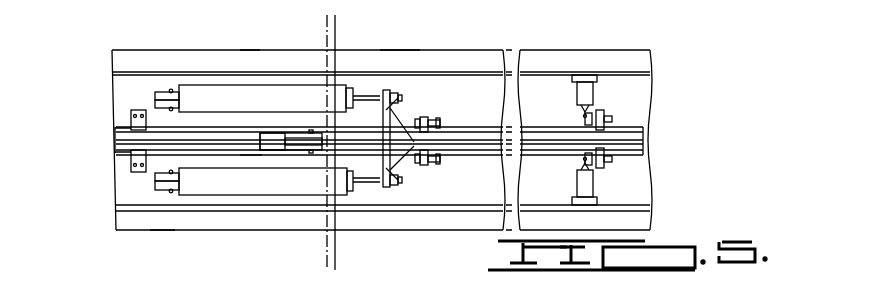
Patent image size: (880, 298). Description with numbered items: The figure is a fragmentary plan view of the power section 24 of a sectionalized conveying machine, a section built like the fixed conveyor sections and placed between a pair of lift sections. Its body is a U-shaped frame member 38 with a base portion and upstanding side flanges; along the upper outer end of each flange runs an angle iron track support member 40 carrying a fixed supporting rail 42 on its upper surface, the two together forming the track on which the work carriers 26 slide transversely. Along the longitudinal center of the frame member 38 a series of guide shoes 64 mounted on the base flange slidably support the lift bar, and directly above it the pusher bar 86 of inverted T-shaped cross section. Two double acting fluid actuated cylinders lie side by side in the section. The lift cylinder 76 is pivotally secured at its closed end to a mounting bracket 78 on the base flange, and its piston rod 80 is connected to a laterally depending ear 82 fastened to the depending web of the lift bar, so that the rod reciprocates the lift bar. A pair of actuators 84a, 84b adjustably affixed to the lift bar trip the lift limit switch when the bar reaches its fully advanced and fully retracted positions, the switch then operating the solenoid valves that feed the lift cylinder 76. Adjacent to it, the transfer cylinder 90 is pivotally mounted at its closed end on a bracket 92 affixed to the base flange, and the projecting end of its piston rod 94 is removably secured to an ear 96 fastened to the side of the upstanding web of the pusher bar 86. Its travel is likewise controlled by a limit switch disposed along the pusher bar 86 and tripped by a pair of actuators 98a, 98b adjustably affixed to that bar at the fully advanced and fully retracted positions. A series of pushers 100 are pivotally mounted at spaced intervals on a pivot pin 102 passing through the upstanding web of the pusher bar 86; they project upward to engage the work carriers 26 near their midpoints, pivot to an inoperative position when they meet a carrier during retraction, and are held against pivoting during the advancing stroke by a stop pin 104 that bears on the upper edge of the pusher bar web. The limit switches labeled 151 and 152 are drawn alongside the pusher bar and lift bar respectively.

The power section 24 is at (388, 46).
The work carrier 26 is at (337, 24).
The U-shaped frame member 38 is at (120, 200).
The track support member 40 is at (260, 74).
The fixed supporting rail 42 is at (240, 58).
The guide shoe 64 is at (115, 144).
The lift cylinder 76 is at (252, 187).
The mounting bracket 78 is at (155, 183).
The piston rod 80 is at (368, 183).
The laterally depending ear 82 is at (393, 173).
The actuator 84a is at (426, 165).
The actuator 84b is at (610, 160).
The pusher bar 86 is at (643, 140).
The transfer cylinder 90 is at (197, 90).
The bracket 92 is at (155, 100).
The piston rod 94 is at (372, 92).
The ear 96 is at (397, 116).
The actuator 98a is at (440, 120).
The actuator 98b is at (610, 118).
The pusher 100 is at (250, 164).
The pivot pin 102 is at (310, 130).
The stop pin 104 is at (263, 133).
The upper sensor 151 is at (593, 93).
The lower sensor 152 is at (593, 188).